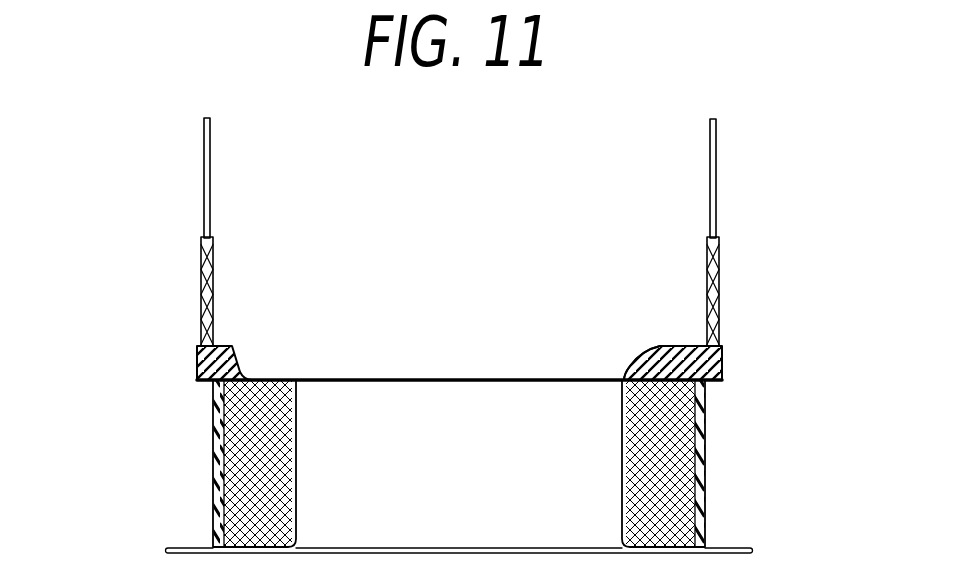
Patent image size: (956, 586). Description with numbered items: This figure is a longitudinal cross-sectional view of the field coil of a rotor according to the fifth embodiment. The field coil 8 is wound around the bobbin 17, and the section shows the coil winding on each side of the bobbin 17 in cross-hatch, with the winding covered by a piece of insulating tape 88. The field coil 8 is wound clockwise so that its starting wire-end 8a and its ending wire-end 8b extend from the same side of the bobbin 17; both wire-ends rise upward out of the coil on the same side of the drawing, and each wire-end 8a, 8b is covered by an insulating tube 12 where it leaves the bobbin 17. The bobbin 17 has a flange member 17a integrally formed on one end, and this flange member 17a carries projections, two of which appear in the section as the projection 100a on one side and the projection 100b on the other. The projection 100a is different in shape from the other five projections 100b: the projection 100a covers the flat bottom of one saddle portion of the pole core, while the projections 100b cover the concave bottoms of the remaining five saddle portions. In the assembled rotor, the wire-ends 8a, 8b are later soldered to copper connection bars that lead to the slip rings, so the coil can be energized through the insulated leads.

The field coil 8 is at (667, 463).
The starting wire-end 8a is at (718, 193).
The ending wire-end 8b is at (210, 190).
The insulating tube 12 is at (213, 293).
The bobbin 17 is at (616, 415).
The flange member 17a is at (658, 344).
The insulating tape 88 is at (213, 461).
The projection 100a is at (232, 347).
The projection 100b is at (693, 346).